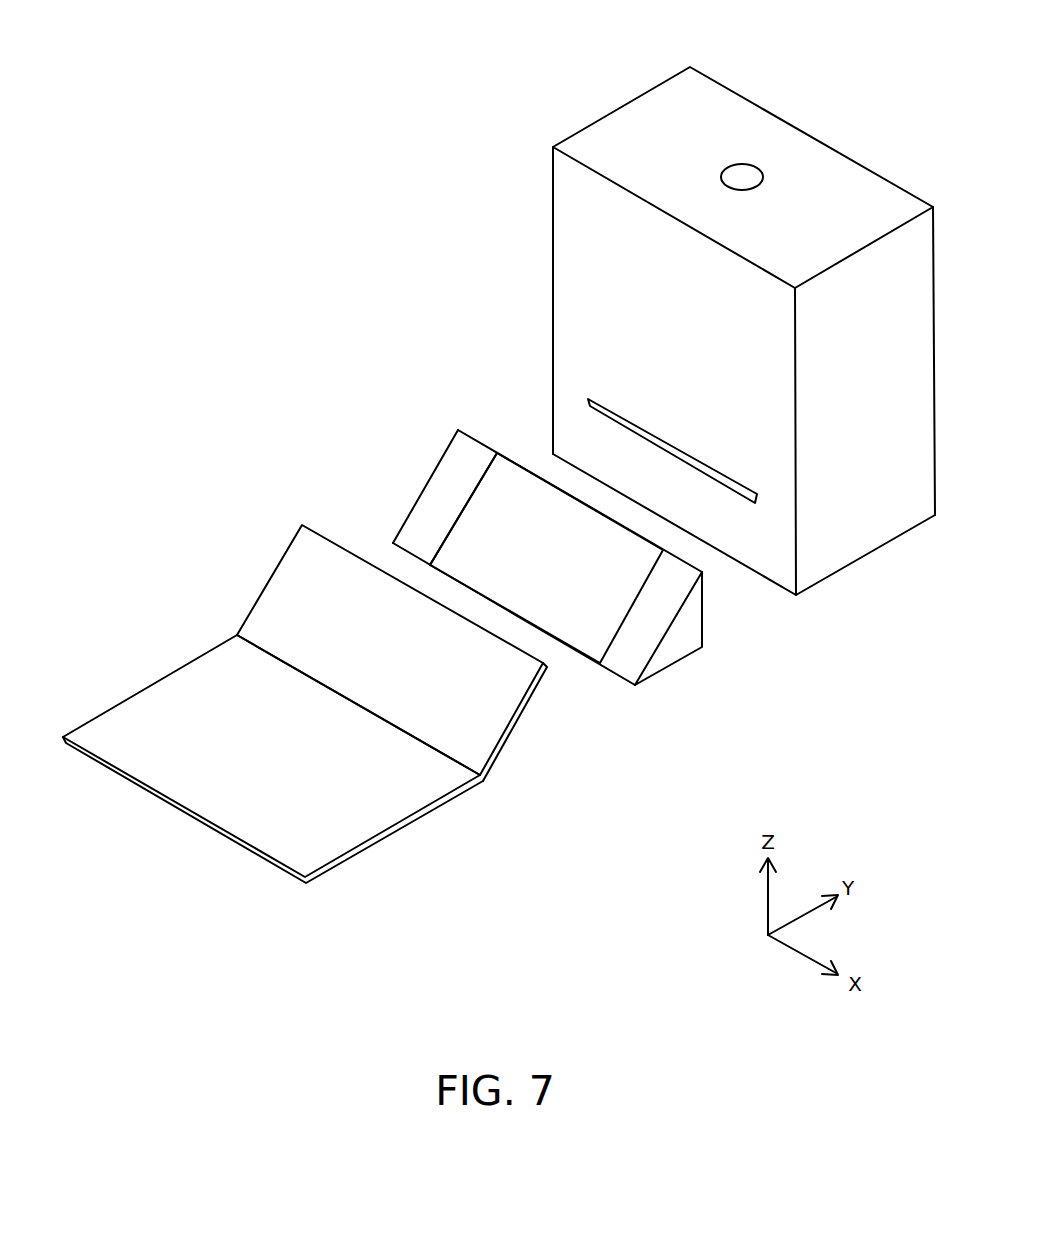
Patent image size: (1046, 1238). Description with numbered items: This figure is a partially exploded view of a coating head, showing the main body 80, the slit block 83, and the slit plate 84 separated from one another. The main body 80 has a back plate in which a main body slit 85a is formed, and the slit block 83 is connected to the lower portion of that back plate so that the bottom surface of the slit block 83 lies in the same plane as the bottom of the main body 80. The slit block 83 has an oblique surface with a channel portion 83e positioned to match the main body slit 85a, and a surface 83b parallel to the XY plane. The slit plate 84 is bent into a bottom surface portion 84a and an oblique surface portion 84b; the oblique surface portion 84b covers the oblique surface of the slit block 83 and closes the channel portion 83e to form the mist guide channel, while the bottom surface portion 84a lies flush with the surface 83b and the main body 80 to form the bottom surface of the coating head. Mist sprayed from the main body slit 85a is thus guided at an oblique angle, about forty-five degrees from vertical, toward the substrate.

The main body 80 is at (789, 139).
The main body slit 85a is at (620, 425).
The slit block 83 is at (565, 562).
The channel portion 83e is at (518, 488).
The surface of the slit block parallel to the XY plane 83b is at (685, 660).
The slit plate 84 is at (324, 690).
The bottom surface portion 84a is at (368, 820).
The oblique surface portion 84b is at (498, 713).